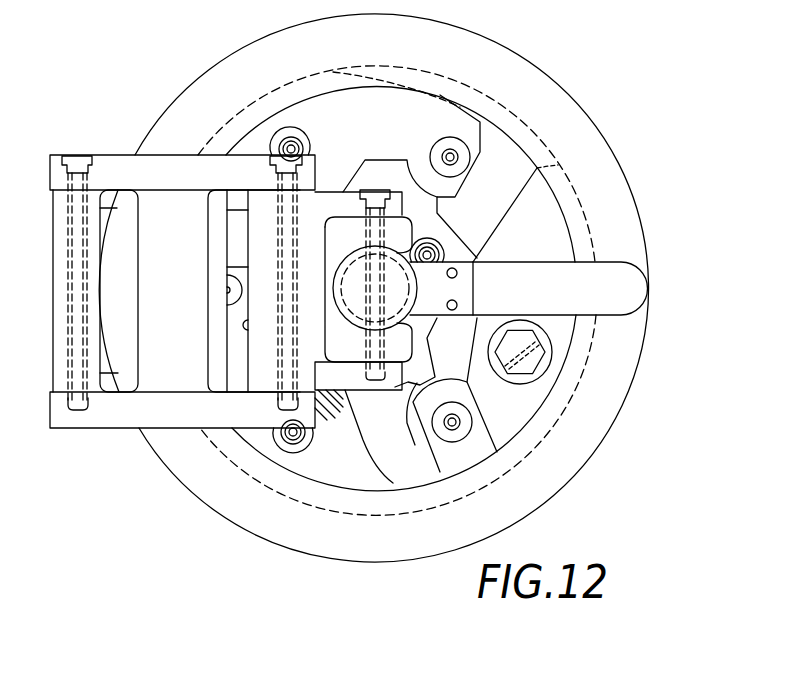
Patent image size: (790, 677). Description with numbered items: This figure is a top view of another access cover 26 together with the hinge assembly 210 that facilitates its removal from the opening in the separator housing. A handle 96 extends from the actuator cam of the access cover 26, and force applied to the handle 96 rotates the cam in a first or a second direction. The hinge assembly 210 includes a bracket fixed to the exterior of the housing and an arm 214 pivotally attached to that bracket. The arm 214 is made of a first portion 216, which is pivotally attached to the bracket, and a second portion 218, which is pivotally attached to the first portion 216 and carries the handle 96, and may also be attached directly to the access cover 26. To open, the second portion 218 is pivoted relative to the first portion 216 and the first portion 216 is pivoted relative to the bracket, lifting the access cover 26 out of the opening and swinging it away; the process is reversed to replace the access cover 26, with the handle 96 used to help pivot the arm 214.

The access cover 26 is at (570, 90).
The handle 96 is at (635, 258).
The hinge assembly 210 is at (233, 286).
The arm 214 is at (102, 433).
The first portion 216 is at (167, 153).
The second portion 218 is at (322, 187).